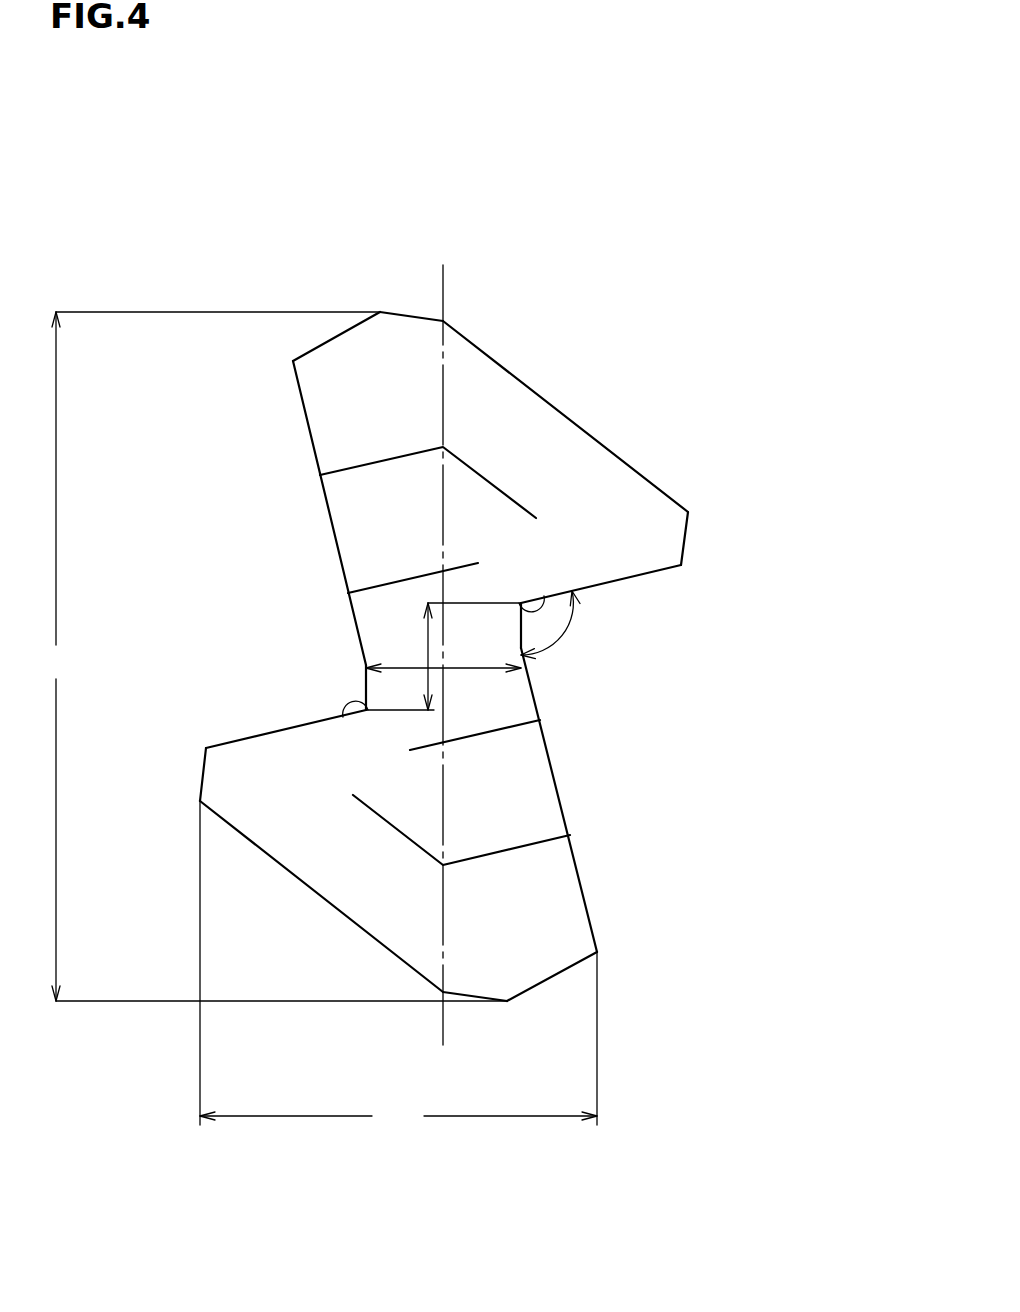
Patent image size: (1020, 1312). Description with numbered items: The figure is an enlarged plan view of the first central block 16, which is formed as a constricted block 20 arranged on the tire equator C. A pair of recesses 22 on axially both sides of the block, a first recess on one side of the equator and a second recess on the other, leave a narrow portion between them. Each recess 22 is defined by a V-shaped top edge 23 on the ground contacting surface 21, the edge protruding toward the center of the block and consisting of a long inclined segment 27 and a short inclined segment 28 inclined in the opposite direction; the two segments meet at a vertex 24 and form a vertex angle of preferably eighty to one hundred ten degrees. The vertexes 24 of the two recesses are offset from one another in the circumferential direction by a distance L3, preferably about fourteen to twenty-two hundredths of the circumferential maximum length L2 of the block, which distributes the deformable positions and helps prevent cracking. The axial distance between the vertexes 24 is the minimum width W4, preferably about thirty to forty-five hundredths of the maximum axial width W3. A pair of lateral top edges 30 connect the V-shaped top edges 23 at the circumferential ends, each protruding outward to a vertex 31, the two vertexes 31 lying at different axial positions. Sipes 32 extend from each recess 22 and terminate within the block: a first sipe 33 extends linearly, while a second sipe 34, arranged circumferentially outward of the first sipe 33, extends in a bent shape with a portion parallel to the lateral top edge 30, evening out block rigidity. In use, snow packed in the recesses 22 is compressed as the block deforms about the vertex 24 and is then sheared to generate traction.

The first central block 16 is at (473, 640).
The constricted block 20 is at (477, 520).
The ground contacting surface 21 is at (342, 392).
The recess 22 is at (347, 690).
The V-shaped top edge 23 is at (473, 656).
The vertex 24 is at (553, 592).
The long inclined segment 27 is at (342, 563).
The short inclined segment 28 is at (255, 735).
The lateral top edge 30 is at (501, 364).
The vertex 31 is at (382, 310).
The sipe 32 is at (452, 677).
The first sipe 33 is at (392, 578).
The second sipe 34 is at (377, 463).
The tire equator C is at (445, 639).
The circumferential maximum length L2 is at (273, 656).
The circumferential distance between vertexes L3 is at (428, 642).
The maximum axial width W3 is at (398, 967).
The minimum width W4 is at (452, 670).